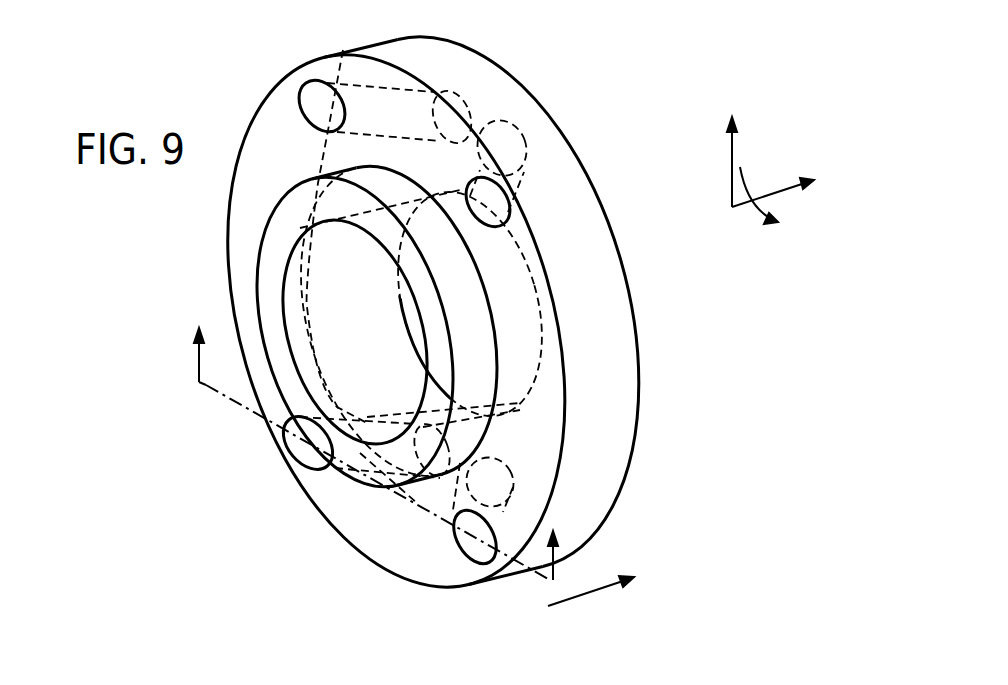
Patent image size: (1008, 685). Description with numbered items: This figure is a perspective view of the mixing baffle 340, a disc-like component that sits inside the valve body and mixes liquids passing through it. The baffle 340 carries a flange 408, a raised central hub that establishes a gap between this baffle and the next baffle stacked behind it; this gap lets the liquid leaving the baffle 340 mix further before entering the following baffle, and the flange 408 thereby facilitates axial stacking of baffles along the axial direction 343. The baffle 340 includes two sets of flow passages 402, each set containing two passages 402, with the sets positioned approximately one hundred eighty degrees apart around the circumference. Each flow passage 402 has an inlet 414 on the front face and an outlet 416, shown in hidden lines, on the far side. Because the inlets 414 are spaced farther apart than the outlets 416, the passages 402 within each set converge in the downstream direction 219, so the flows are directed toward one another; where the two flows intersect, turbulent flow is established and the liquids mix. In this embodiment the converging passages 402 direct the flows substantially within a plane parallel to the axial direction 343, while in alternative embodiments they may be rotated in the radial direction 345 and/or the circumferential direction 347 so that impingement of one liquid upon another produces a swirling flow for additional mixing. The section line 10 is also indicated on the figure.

The mixing baffle 340 is at (521, 84).
The flange 408 is at (272, 273).
The inlet 414 is at (340, 110).
The outlet 416 is at (470, 107).
The flow passage 402 is at (520, 182).
The axis 10 is at (380, 451).
The downstream direction 219 is at (584, 598).
The axial direction 343 is at (778, 196).
The radial direction 345 is at (733, 171).
The circumferential direction 347 is at (750, 212).